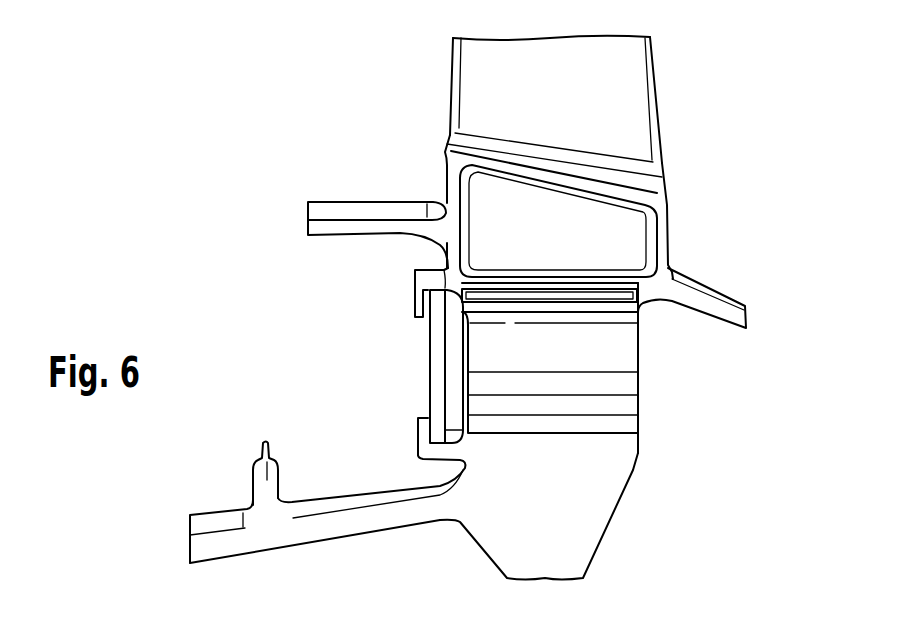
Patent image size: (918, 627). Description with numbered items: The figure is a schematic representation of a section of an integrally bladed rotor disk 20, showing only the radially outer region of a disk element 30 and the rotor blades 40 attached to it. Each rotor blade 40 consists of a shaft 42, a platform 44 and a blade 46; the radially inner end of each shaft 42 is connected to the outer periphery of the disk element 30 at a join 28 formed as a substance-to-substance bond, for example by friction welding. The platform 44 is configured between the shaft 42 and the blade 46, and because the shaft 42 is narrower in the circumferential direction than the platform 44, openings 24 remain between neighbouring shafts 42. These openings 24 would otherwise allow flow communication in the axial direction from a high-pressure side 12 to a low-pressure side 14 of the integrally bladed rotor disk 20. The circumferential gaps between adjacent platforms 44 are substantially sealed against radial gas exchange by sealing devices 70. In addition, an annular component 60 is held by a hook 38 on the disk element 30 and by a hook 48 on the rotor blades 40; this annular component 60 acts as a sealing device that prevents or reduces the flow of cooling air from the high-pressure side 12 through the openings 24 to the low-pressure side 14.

The high-pressure side 12 is at (730, 270).
The low-pressure side 14 is at (333, 268).
The integrally bladed rotor disk 20 is at (307, 165).
The openings 24 is at (587, 352).
The join 28 is at (587, 395).
The disk element 30 is at (563, 527).
The hook 38 is at (413, 425).
The rotor blade 40 is at (613, 70).
The shaft 42 is at (497, 352).
The platform 44 is at (523, 212).
The blade 46 is at (497, 85).
The hook 48 is at (413, 309).
The annular component 60 is at (438, 388).
The sealing device 70 is at (573, 300).